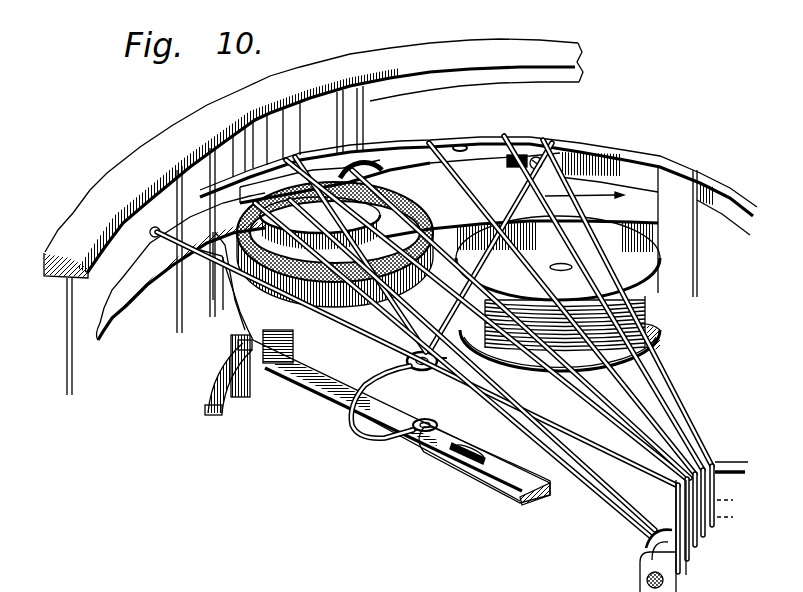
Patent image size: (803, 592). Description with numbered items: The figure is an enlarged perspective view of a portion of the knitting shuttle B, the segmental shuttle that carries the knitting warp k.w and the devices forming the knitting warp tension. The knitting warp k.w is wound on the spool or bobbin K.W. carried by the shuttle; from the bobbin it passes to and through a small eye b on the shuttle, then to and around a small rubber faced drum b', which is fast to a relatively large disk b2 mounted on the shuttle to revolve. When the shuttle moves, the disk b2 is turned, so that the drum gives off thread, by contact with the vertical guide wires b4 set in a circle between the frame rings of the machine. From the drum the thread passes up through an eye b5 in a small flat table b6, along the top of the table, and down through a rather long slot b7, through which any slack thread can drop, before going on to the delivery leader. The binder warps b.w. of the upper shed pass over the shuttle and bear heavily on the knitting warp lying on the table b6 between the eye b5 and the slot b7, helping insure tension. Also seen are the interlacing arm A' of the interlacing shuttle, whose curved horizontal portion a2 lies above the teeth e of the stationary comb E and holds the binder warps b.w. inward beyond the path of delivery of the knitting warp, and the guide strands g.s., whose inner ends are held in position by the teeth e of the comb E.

The guide strands g.s. is at (215, 172).
The slot b7 is at (380, 124).
The vertical guide wires b4 is at (167, 206).
The eye b5 is at (461, 144).
The flat table b6 is at (487, 146).
The rubber faced drum b' is at (335, 232).
The disk b2 is at (328, 298).
The eye b is at (399, 384).
The knitting shuttle B is at (375, 368).
The spool or bobbin K.W. is at (558, 293).
The knitting warp k.w is at (650, 311).
The binder warps b.w. is at (672, 392).
The horizontal portion of the interlacing arm a2 is at (712, 461).
The interlacing arm A' is at (478, 327).
The teeth e is at (652, 545).
The comb E is at (671, 536).